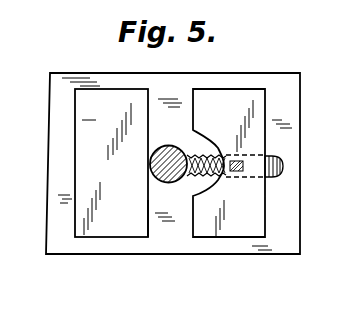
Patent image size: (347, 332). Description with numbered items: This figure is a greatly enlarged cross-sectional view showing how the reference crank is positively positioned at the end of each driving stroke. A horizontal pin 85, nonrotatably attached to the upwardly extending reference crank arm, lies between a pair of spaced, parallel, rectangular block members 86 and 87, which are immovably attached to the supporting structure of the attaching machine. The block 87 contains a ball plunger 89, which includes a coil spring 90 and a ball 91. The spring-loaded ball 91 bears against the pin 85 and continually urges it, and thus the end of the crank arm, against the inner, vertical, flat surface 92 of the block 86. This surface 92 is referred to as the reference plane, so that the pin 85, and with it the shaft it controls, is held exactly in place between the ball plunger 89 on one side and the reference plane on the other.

The horizontal pin 85 is at (168, 154).
The rectangular block member 86 is at (115, 237).
The rectangular block member 87 is at (231, 237).
The ball plunger 89 is at (284, 166).
The coil spring 90 is at (228, 171).
The ball 91 is at (190, 172).
The inner vertical flat surface 92 is at (148, 226).